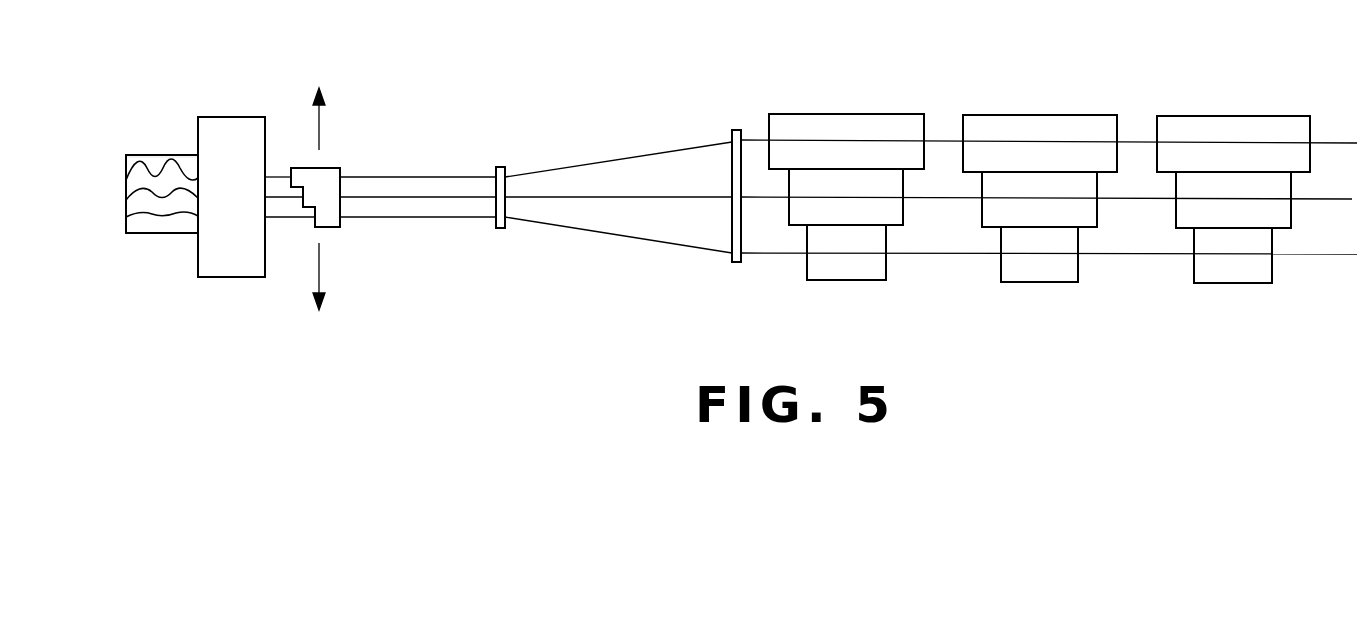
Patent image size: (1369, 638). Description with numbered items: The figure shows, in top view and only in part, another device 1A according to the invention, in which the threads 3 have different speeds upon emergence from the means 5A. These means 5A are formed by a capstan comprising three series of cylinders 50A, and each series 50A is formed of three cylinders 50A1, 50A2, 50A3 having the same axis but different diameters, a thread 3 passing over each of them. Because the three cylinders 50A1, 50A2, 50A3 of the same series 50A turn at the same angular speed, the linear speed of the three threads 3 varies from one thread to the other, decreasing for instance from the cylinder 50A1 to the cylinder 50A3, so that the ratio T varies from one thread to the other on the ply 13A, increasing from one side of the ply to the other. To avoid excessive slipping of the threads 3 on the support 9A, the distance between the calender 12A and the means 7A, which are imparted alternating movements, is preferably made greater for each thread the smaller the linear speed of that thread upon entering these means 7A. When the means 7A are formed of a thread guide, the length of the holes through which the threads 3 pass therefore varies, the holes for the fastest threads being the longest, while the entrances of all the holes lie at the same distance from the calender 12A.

The device 1A is at (1054, 172).
The threads 3 is at (691, 150).
The means (capstan) 5A is at (887, 113).
The means imparting alternating movements 7A is at (330, 167).
The support 9A is at (163, 233).
The calender 12A is at (253, 278).
The ply 13A is at (157, 156).
The series of cylinders 50A is at (1270, 116).
The first cylinder 50A1 is at (1065, 115).
The second cylinder 50A2 is at (982, 213).
The third cylinder 50A3 is at (1078, 267).